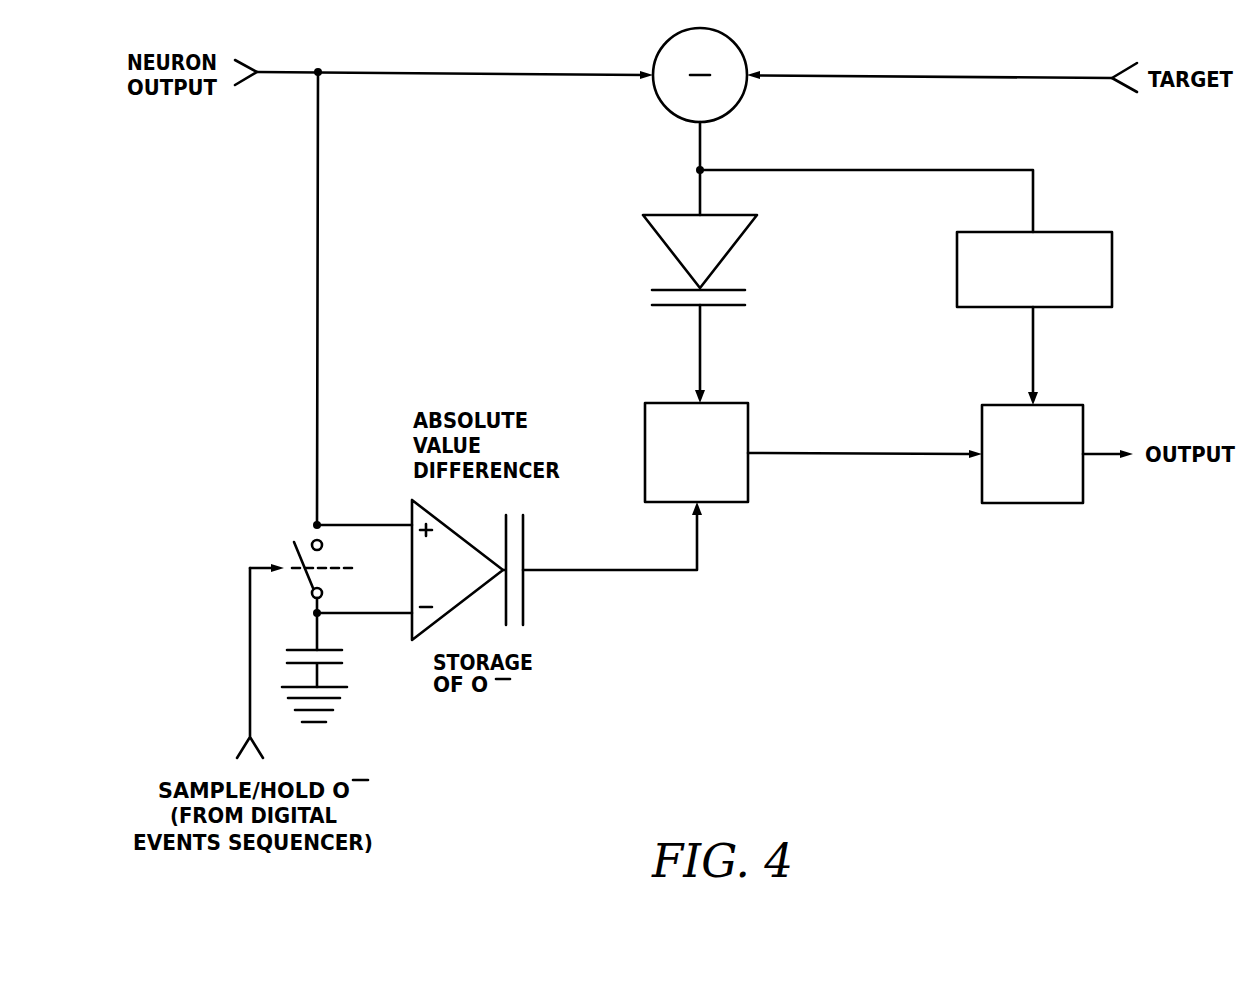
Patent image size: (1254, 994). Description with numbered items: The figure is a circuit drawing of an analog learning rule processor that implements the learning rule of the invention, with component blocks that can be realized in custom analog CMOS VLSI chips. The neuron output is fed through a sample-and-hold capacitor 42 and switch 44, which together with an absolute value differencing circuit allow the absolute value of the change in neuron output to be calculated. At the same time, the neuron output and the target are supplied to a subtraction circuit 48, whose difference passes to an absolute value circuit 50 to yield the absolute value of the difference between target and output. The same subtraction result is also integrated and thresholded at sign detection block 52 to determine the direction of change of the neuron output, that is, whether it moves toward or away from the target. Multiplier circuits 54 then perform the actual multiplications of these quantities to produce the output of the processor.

The sample-and-hold capacitor 42 is at (337, 657).
The switch 44 is at (277, 517).
The subtraction circuit 48 is at (668, 112).
The absolute value circuit 50 is at (640, 247).
The integrating and thresholding circuit 52 is at (1090, 232).
The multiplier circuits 54 is at (723, 403).